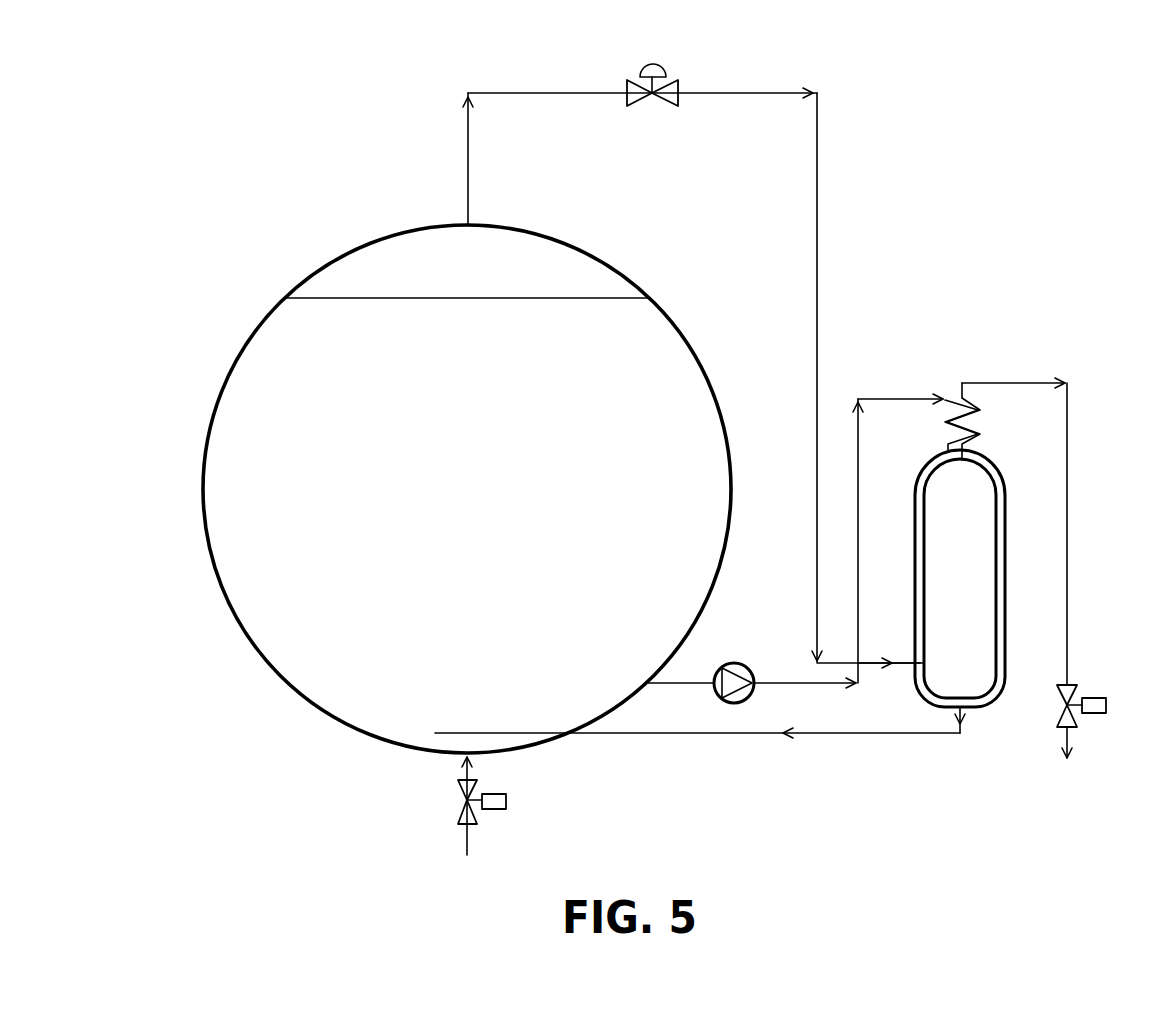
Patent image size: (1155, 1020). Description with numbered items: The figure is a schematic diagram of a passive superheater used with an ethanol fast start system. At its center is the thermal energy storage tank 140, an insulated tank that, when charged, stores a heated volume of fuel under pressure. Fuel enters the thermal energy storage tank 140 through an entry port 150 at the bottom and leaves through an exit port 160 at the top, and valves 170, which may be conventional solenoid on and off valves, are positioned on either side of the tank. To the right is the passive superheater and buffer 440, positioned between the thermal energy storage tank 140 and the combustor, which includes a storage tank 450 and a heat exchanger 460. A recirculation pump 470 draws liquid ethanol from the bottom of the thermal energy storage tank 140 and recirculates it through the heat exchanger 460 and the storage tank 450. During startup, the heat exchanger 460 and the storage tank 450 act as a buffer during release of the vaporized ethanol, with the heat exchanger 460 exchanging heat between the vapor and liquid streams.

The thermal energy storage tank 140 is at (259, 320).
The entry port 150 is at (462, 766).
The exit port 160 is at (468, 161).
The valves 170 is at (650, 63).
The passive superheater and buffer 440 is at (1012, 458).
The storage tank 450 is at (1005, 623).
The heat exchanger 460 is at (955, 400).
The recirculation pump 470 is at (737, 663).